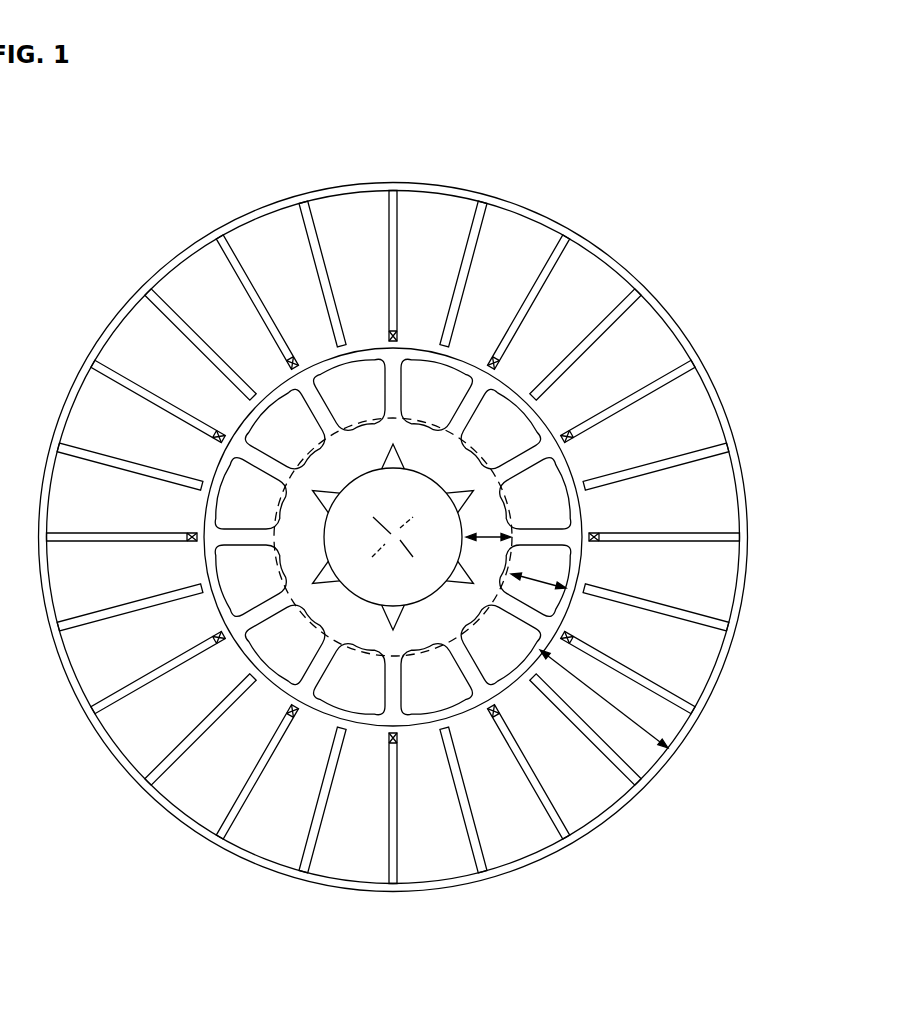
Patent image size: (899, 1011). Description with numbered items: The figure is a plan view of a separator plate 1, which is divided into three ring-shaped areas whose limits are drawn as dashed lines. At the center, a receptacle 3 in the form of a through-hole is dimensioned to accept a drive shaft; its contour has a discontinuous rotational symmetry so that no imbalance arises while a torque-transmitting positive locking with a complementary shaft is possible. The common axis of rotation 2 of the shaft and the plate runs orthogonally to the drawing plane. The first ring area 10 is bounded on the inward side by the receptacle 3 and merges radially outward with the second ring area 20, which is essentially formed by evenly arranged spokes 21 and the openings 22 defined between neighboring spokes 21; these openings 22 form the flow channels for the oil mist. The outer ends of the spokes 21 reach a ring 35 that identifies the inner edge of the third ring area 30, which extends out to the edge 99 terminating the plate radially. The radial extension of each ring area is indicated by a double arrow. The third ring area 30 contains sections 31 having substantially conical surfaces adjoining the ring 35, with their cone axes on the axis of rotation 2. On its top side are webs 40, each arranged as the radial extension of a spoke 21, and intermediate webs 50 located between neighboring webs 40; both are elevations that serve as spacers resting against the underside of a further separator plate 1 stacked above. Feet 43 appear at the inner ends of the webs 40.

The separator plate 1 is at (740, 376).
The axis of rotation 2 is at (385, 535).
The receptacle 3 is at (402, 510).
The first ring area 10 is at (488, 522).
The second ring area 20 is at (538, 570).
The spoke 21 is at (402, 368).
The opening 22 is at (341, 406).
The third ring area 30 is at (668, 748).
The section 31 is at (596, 389).
The ring 35 is at (572, 437).
The web 40 is at (400, 215).
The spoke foot 43 is at (292, 357).
The intermediate web 50 is at (310, 222).
The edge 99 is at (723, 667).